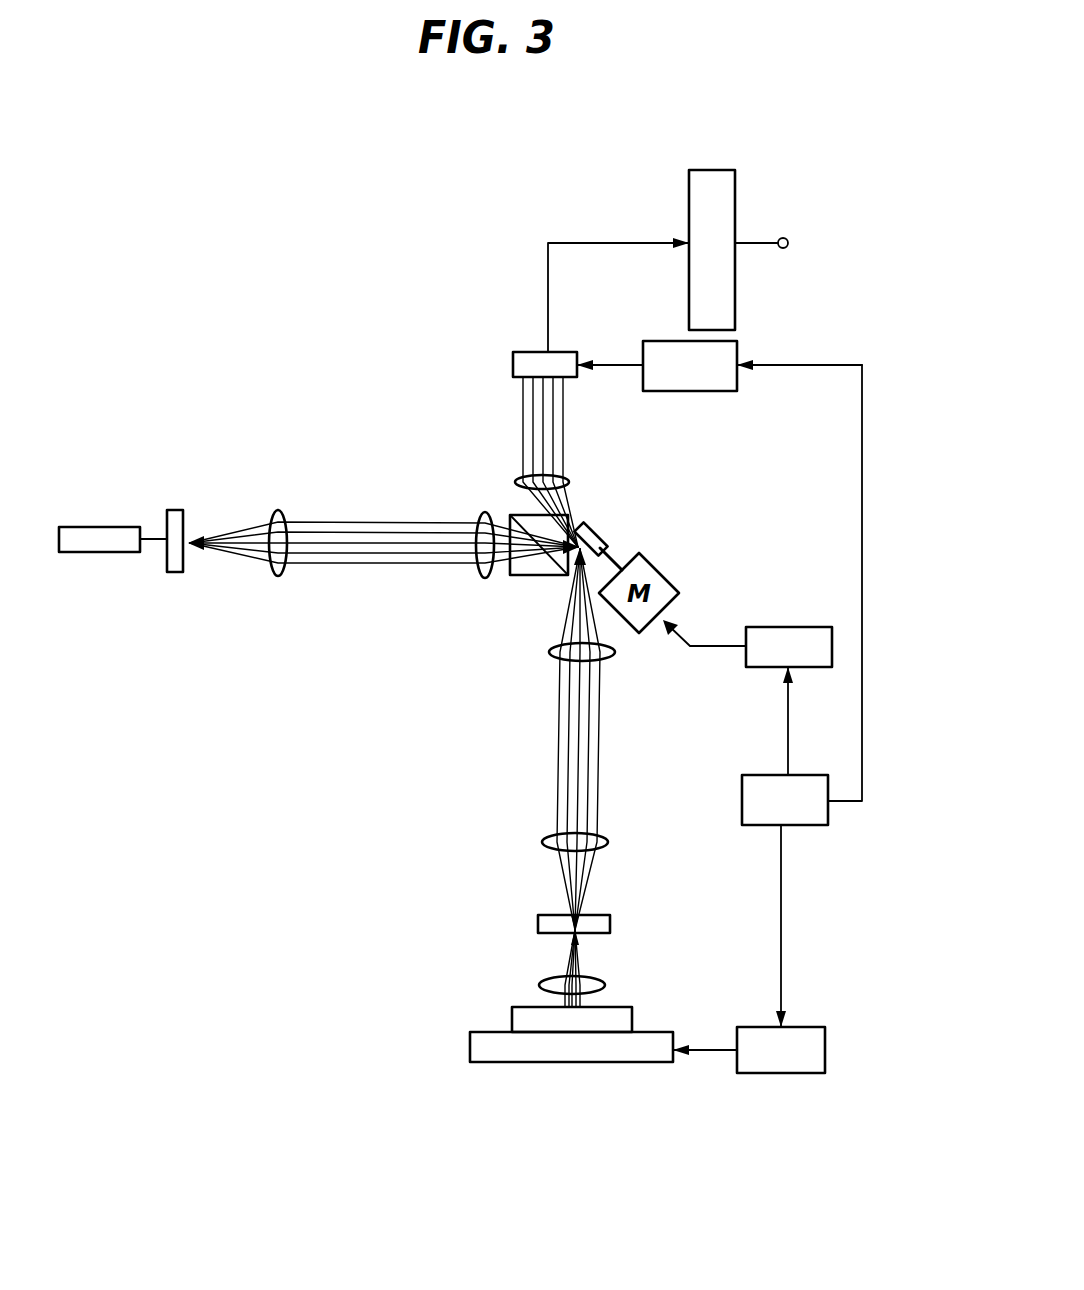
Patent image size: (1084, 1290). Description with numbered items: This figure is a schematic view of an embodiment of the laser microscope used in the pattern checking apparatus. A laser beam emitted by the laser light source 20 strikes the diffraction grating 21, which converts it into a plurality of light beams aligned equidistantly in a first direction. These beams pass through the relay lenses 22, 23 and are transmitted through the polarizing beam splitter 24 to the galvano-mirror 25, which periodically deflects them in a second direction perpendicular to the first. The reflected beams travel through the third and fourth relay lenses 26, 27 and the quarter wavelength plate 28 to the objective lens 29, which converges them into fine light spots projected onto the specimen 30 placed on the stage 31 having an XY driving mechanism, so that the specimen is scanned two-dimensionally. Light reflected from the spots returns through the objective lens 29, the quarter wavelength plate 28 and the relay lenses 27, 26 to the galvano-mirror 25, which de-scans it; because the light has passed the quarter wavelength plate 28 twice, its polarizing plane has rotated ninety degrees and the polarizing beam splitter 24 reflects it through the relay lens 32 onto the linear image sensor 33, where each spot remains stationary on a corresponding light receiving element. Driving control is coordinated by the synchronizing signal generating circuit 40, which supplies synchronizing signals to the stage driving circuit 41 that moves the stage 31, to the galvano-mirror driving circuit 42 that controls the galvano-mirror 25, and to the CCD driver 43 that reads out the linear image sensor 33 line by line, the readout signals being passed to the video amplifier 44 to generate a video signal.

The laser light source 20 is at (113, 527).
The diffraction grating 21 is at (175, 510).
The relay lens 22 is at (278, 510).
The relay lens 23 is at (485, 512).
The polarizing beam splitter 24 is at (512, 515).
The galvano-mirror 25 is at (599, 530).
The third relay lens 26 is at (549, 652).
The fourth relay lens 27 is at (542, 842).
The quarter wavelength plate 28 is at (538, 922).
The objective lens 29 is at (540, 985).
The specimen 30 is at (512, 1015).
The stage 31 is at (470, 1043).
The relay lens 32 is at (569, 482).
The linear image sensor 33 is at (527, 352).
The synchronizing signal generating circuit 40 is at (795, 825).
The stage driving circuit 41 is at (746, 1073).
The galvano-mirror driving circuit 42 is at (776, 627).
The CCD driver 43 is at (740, 341).
The video amplifier 44 is at (693, 170).